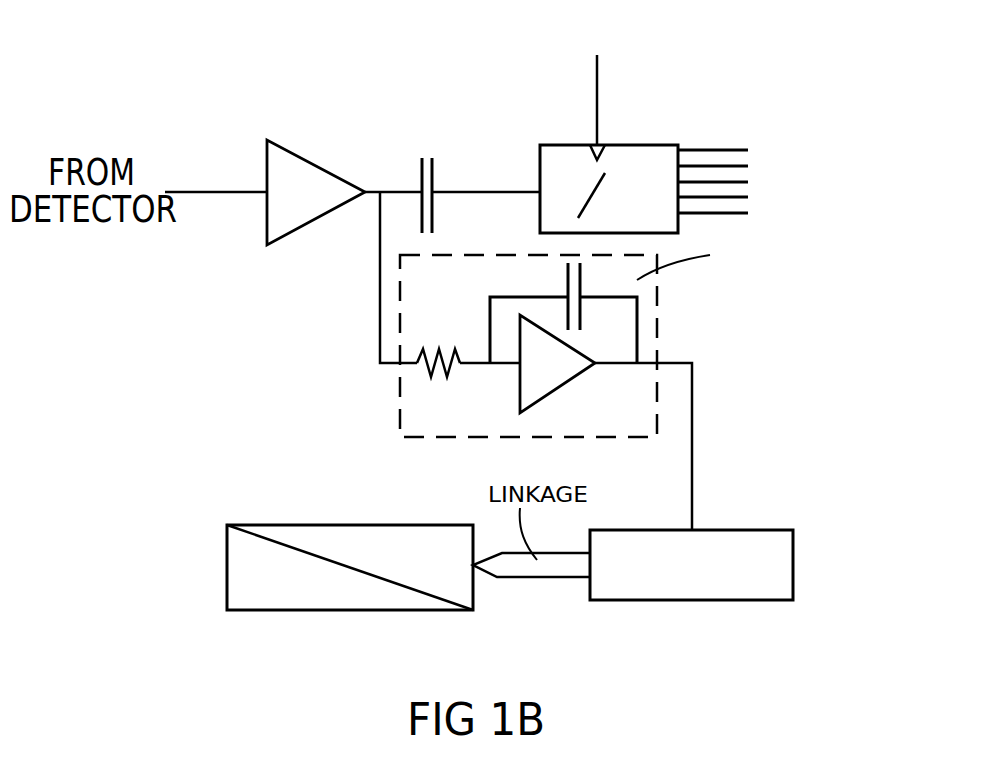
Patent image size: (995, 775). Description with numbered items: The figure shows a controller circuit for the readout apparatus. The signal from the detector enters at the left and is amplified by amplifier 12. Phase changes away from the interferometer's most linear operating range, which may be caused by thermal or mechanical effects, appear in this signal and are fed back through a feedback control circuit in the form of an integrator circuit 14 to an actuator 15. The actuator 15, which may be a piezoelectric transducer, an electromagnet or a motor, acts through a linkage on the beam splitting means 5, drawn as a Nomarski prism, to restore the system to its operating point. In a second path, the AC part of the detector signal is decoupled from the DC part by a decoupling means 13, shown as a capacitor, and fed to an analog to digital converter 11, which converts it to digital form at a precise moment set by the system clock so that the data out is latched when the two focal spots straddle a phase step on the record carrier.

The beam splitting means 5 is at (248, 560).
The analog to digital converter 11 is at (645, 160).
The amplifier 12 is at (293, 168).
The decoupling means 13 is at (423, 157).
The integrator circuit 14 is at (643, 337).
The actuator 15 is at (777, 565).